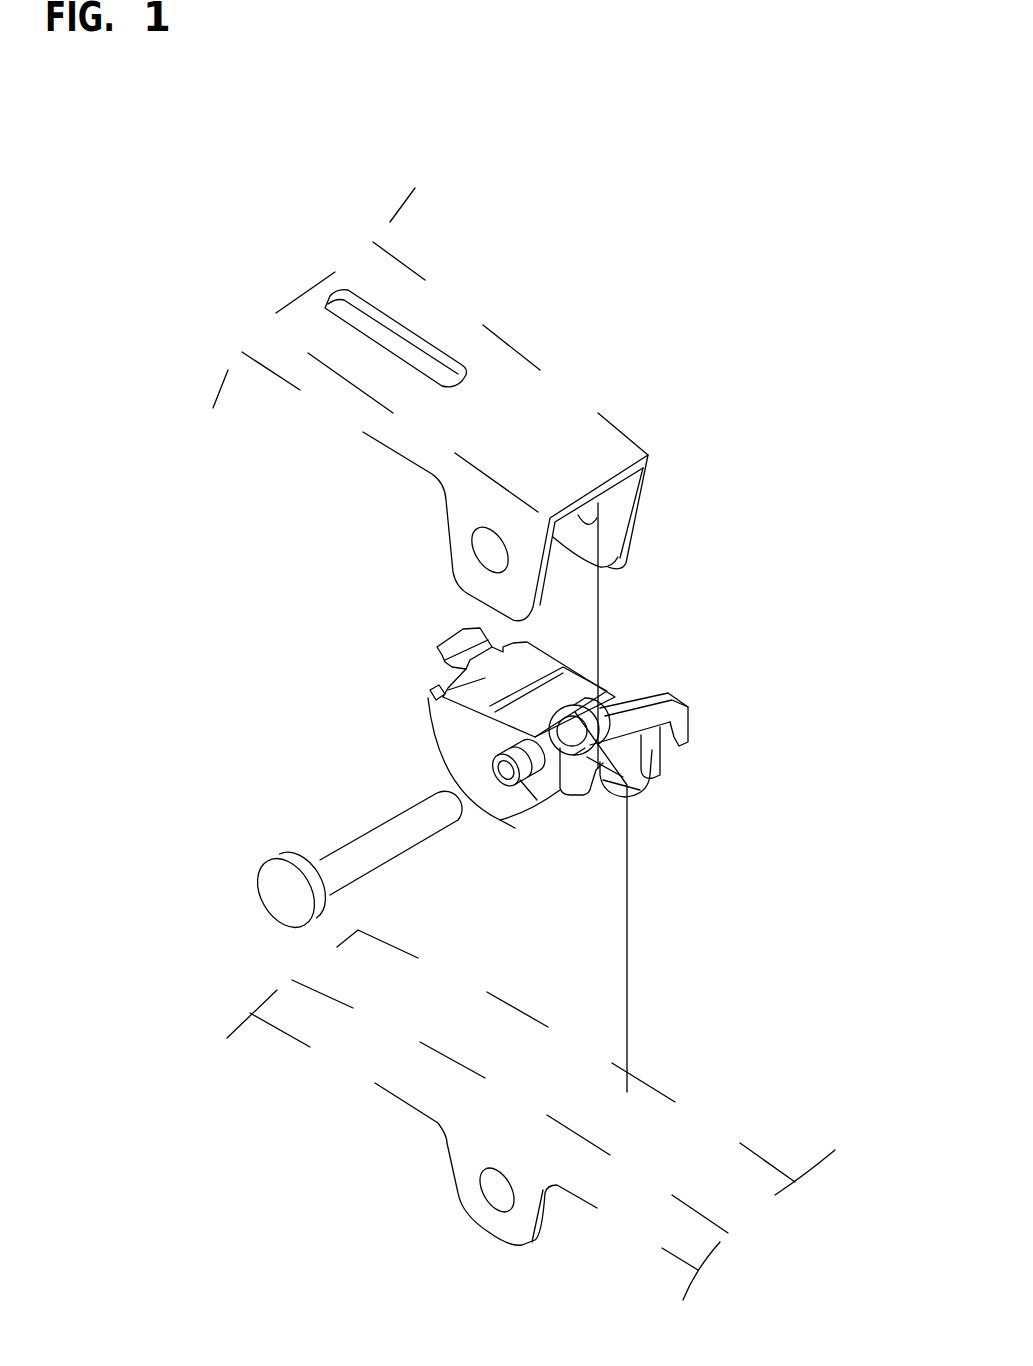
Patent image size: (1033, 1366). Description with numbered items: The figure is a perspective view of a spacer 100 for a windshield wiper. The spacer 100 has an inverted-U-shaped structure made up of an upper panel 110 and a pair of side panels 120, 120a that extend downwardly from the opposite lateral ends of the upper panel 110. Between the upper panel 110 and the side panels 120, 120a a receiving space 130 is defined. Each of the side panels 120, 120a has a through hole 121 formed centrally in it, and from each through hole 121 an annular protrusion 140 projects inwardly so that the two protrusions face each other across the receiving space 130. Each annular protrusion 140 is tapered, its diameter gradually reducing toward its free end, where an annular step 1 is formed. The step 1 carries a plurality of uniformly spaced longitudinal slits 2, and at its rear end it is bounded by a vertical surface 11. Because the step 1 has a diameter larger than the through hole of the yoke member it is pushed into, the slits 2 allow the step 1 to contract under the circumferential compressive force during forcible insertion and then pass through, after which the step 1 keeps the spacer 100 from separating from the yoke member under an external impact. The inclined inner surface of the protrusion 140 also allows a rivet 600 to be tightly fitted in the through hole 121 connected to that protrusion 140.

The spacer 100 is at (400, 632).
The upper panel 110 is at (430, 695).
The vertical surface 11 is at (495, 750).
The through hole 121 is at (503, 787).
The annular protrusion 140 is at (528, 790).
The side panel 120 is at (560, 807).
The receiving space 130 is at (603, 807).
The longitudinal slit 2 is at (640, 790).
The side panel 120a is at (660, 757).
The annular step 1 is at (590, 722).
The rivet 600 is at (330, 865).